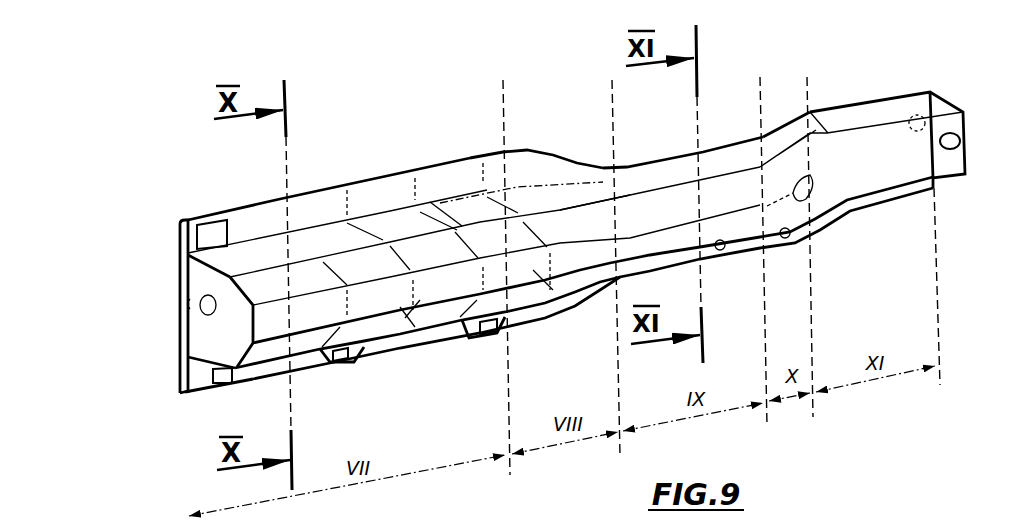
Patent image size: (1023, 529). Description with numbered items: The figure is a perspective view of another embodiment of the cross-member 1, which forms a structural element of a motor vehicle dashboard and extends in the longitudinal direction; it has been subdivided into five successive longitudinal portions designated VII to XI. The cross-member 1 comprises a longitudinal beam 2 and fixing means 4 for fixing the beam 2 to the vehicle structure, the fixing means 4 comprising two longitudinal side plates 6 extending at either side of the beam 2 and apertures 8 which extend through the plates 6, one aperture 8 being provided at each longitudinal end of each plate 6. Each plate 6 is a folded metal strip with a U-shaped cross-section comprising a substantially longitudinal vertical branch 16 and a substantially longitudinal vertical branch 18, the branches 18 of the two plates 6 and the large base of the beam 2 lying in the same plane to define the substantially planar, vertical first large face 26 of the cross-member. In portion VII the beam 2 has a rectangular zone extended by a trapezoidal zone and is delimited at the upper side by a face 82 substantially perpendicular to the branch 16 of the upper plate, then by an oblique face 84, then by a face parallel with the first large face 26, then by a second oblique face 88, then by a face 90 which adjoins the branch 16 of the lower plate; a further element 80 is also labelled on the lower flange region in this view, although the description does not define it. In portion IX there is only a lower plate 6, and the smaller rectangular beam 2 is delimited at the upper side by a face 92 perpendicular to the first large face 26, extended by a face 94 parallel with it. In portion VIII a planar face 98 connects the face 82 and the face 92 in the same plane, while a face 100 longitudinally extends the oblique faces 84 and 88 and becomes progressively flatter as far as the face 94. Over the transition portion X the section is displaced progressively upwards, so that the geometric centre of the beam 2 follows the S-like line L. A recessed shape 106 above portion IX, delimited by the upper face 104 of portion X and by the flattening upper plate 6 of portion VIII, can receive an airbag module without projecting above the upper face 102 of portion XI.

The cross-member 1 is at (150, 203).
The longitudinal beam 2 is at (236, 336).
The fixing means 4 is at (173, 230).
The longitudinal side plate 6 is at (225, 0).
The aperture 8 is at (209, 230).
The vertical branch 16 is at (367, 197).
The vertical branch 18 is at (177, 243).
The first large face 26 is at (173, 293).
The flange 80 is at (408, 330).
The face 82 is at (325, 243).
The oblique face 84 is at (450, 247).
The second oblique face 88 is at (367, 343).
The face 90 is at (223, 365).
The face 92 is at (675, 168).
The face 94 is at (670, 238).
The planar face 98 is at (530, 200).
The face 100 is at (537, 270).
The upper face 102 is at (880, 110).
The upper face 104 is at (788, 128).
The recessed shape 106 is at (645, 145).
The S-like line L is at (812, 174).